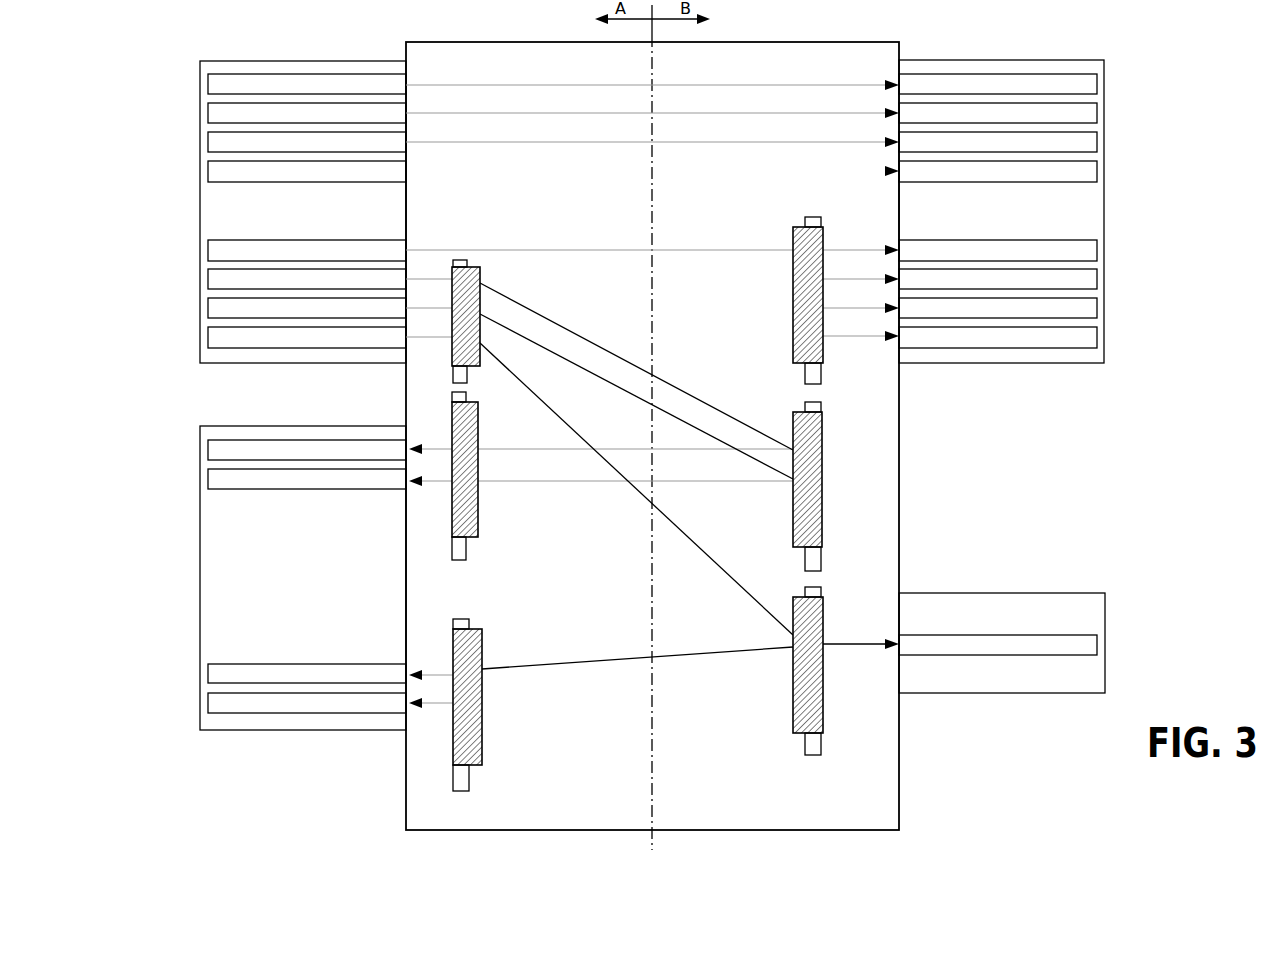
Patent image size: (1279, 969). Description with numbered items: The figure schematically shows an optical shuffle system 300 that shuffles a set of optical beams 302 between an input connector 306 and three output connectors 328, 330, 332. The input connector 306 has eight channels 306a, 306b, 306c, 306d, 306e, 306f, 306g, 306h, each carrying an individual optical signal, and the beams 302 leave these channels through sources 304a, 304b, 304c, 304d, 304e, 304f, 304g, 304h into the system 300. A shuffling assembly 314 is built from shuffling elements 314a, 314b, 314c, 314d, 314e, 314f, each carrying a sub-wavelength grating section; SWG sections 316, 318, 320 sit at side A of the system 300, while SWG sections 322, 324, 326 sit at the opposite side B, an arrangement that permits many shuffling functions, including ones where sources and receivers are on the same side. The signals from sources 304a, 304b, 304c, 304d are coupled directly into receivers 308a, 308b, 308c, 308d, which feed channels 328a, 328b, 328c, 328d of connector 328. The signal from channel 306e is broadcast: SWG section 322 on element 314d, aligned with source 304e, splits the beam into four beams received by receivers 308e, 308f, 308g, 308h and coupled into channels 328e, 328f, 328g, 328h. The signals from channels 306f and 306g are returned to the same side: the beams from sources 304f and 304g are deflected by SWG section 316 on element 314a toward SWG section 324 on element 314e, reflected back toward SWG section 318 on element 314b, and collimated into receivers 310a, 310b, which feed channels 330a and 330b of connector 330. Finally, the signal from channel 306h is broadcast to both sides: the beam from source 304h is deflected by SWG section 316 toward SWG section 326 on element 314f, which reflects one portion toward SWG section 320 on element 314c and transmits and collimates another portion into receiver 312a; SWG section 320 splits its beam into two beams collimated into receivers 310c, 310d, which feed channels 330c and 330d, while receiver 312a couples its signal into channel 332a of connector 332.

The optical shuffle system 300 is at (517, 41).
The optical beams 302 is at (518, 85).
The source 304a is at (410, 84).
The source 304b is at (426, 101).
The source 304c is at (410, 142).
The source 304d is at (410, 176).
The source 304e is at (410, 250).
The source 304f is at (426, 271).
The source 304g is at (426, 300).
The source 304h is at (426, 329).
The input connector 306 is at (238, 61).
The channel 306a is at (208, 77).
The channel 306b is at (208, 119).
The channel 306c is at (208, 140).
The channel 306d is at (208, 172).
The channel 306e is at (213, 250).
The channel 306f is at (208, 281).
The channel 306g is at (208, 301).
The channel 306h is at (208, 337).
The receiver 308a is at (884, 84).
The receiver 308b is at (884, 113).
The receiver 308c is at (884, 142).
The receiver 308d is at (884, 172).
The receiver 308e is at (885, 249).
The receiver 308f is at (885, 279).
The receiver 308g is at (885, 307).
The receiver 308h is at (885, 336).
The receiver 310a is at (426, 447).
The receiver 310b is at (426, 479).
The receiver 310c is at (428, 665).
The receiver 310d is at (428, 712).
The receiver 312a is at (893, 641).
The shuffling assembly 314 is at (481, 244).
The shuffling element 314a is at (467, 372).
The shuffling element 314b is at (466, 552).
The shuffling element 314c is at (469, 783).
The shuffling element 314d is at (805, 372).
The shuffling element 314e is at (821, 560).
The shuffling element 314f is at (821, 750).
The SWG section 316 is at (480, 272).
The SWG section 318 is at (478, 434).
The SWG section 320 is at (482, 639).
The SWG section 322 is at (793, 270).
The SWG section 324 is at (793, 528).
The SWG section 326 is at (793, 688).
The output connector 328 is at (985, 60).
The channel 328a is at (1097, 85).
The channel 328b is at (1097, 125).
The channel 328c is at (1097, 145).
The channel 328d is at (1097, 177).
The channel 328e is at (1097, 256).
The channel 328f is at (1097, 287).
The channel 328g is at (1097, 312).
The channel 328h is at (1097, 340).
The output connector 330 is at (257, 426).
The channel 330a is at (208, 450).
The channel 330b is at (208, 478).
The channel 330c is at (208, 670).
The channel 330d is at (208, 698).
The output connector 332 is at (1060, 593).
The channel 332a is at (1097, 645).